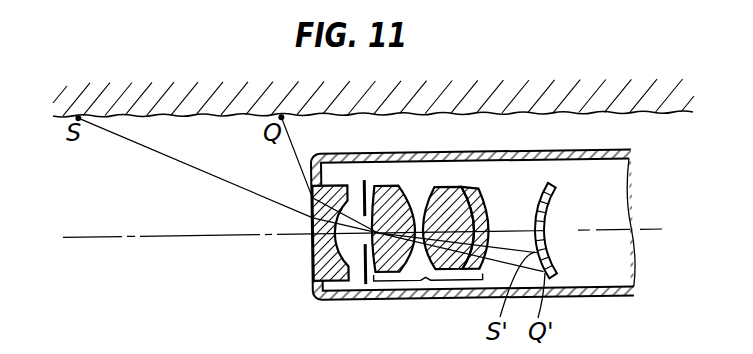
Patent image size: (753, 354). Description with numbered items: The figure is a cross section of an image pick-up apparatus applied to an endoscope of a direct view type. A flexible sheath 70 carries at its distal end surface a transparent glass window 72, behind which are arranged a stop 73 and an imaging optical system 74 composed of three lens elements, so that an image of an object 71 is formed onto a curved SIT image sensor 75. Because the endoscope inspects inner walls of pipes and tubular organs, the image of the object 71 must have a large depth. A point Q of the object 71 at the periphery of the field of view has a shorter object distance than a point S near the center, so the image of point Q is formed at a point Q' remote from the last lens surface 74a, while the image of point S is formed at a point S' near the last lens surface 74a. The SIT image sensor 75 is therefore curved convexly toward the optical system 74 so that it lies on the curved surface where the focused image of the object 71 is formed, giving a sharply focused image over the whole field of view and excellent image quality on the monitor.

The flexible sheath 70 is at (448, 298).
The object 71 is at (235, 118).
The transparent glass window 72 is at (312, 259).
The stop 73 is at (367, 278).
The imaging optical system 74 is at (425, 283).
The last lens surface 74a is at (483, 204).
The curved SIT image sensor 75 is at (557, 202).